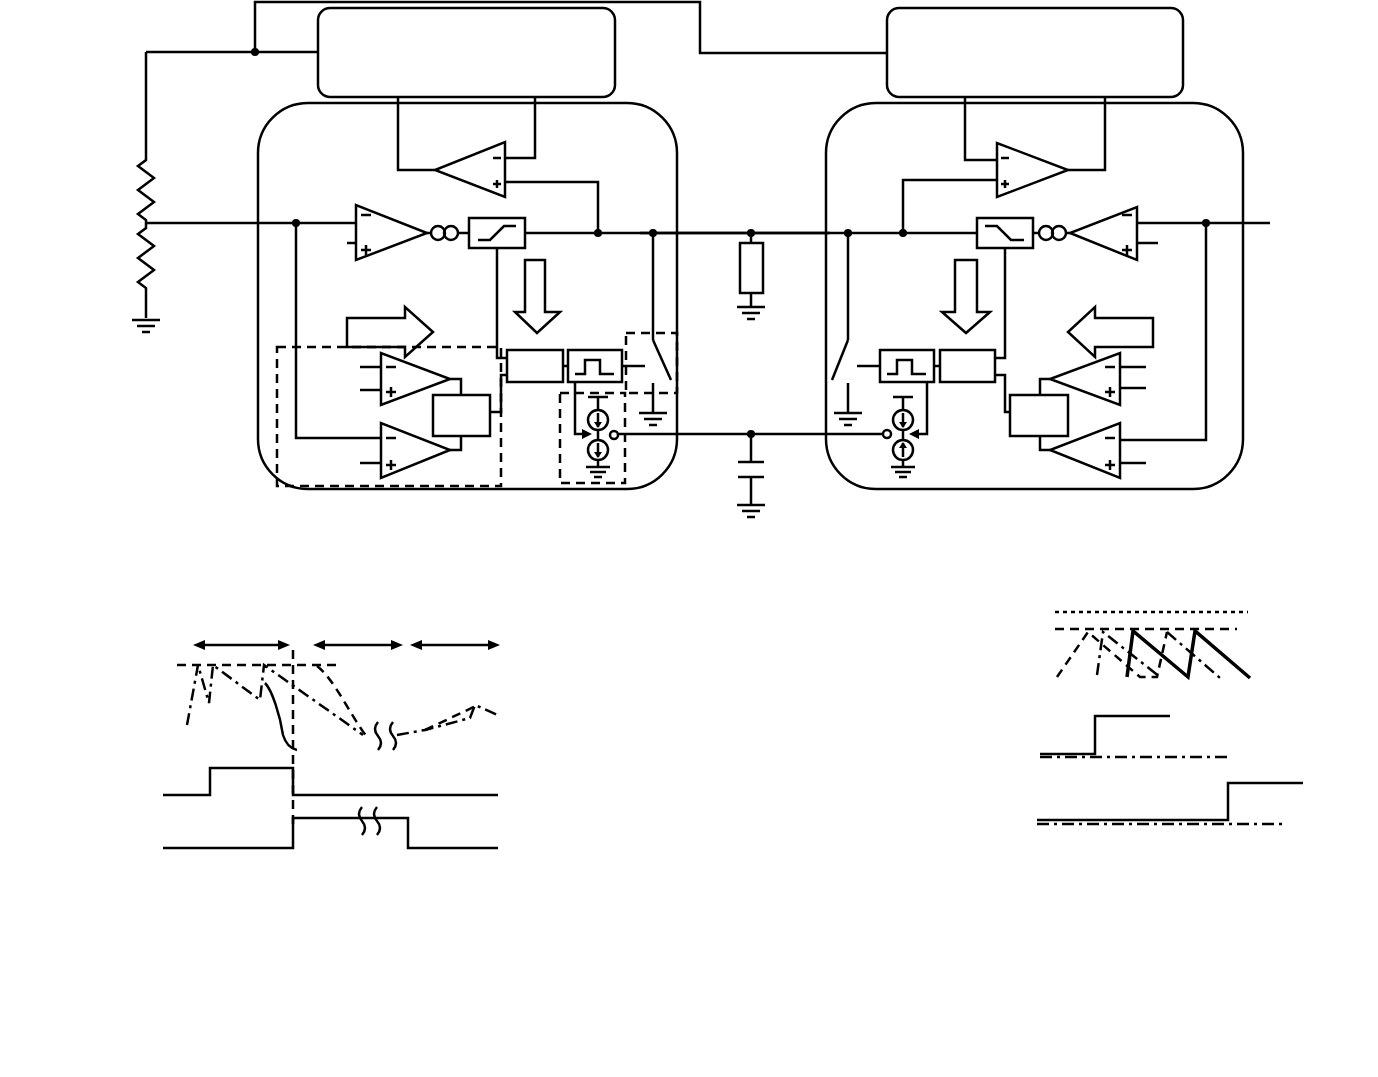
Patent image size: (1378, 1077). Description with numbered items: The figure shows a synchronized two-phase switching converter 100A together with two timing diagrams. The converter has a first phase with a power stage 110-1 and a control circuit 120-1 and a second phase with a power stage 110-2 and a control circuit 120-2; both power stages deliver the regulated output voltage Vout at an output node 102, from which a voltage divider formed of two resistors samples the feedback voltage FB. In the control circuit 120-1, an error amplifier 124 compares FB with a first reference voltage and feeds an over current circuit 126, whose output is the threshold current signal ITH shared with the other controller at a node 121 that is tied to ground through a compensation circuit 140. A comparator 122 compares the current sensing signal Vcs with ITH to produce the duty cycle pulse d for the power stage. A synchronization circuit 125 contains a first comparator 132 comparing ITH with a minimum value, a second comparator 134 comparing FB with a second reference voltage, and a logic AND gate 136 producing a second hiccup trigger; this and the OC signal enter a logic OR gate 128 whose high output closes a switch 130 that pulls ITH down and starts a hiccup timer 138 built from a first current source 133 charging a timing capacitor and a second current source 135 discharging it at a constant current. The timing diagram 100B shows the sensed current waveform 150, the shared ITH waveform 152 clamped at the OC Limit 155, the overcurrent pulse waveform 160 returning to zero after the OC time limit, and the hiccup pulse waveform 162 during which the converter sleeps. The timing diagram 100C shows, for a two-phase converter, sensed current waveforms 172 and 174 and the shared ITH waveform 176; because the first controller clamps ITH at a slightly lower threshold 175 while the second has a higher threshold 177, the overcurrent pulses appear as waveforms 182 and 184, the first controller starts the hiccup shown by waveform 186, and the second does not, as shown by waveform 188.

In FIG. 1A, the synchronized two-phase switching converter 100A is at (106, 58).
In FIG. 1A, the output node 102 is at (150, 72).
In FIG. 1A, the power stage 110-1 is at (498, 88).
In FIG. 1A, the power stage 110-2 is at (1066, 88).
In FIG. 1A, the control circuit 120-1 is at (345, 156).
In FIG. 1A, the control circuit 120-2 is at (913, 156).
In FIG. 1A, the node 121 is at (748, 229).
In FIG. 1A, the comparator 122 is at (490, 143).
In FIG. 1A, the error amplifier 124 is at (385, 250).
In FIG. 1A, the synchronization circuit 125 is at (277, 486).
In FIG. 1A, the over current circuit 126 is at (520, 218).
In FIG. 1A, the logic OR gate 128 is at (540, 349).
In FIG. 1A, the switch 130 is at (667, 333).
In FIG. 1A, the first comparator 132 is at (435, 371).
In FIG. 1A, the first current source 133 is at (610, 418).
In FIG. 1A, the second comparator 134 is at (400, 478).
In FIG. 1A, the second current source 135 is at (588, 452).
In FIG. 1A, the logic AND gate 136 is at (467, 437).
In FIG. 1A, the hiccup timer 138 is at (625, 483).
In FIG. 1A, the compensation circuit 140 is at (765, 268).
In FIG. 1B, the timing diagram 100B is at (106, 566).
In FIG. 1B, the waveform 150 is at (296, 745).
In FIG. 1B, the waveform 152 is at (340, 698).
In FIG. 1B, the OC Limit 155 is at (183, 663).
In FIG. 1B, the waveform 160 is at (210, 778).
In FIG. 1B, the waveform 162 is at (340, 820).
In FIG. 1C, the timing diagram 100C is at (1016, 596).
In FIG. 1C, the waveform 172 is at (1240, 663).
In FIG. 1C, the waveform 174 is at (1097, 673).
In FIG. 1C, the threshold 175 is at (1245, 628).
In FIG. 1C, the waveform 176 is at (1072, 663).
In FIG. 1C, the threshold 177 is at (1175, 612).
In FIG. 1C, the waveform 182 is at (1095, 725).
In FIG. 1C, the waveform 184 is at (1230, 755).
In FIG. 1C, the waveform 186 is at (1295, 783).
In FIG. 1C, the waveform 188 is at (1075, 825).